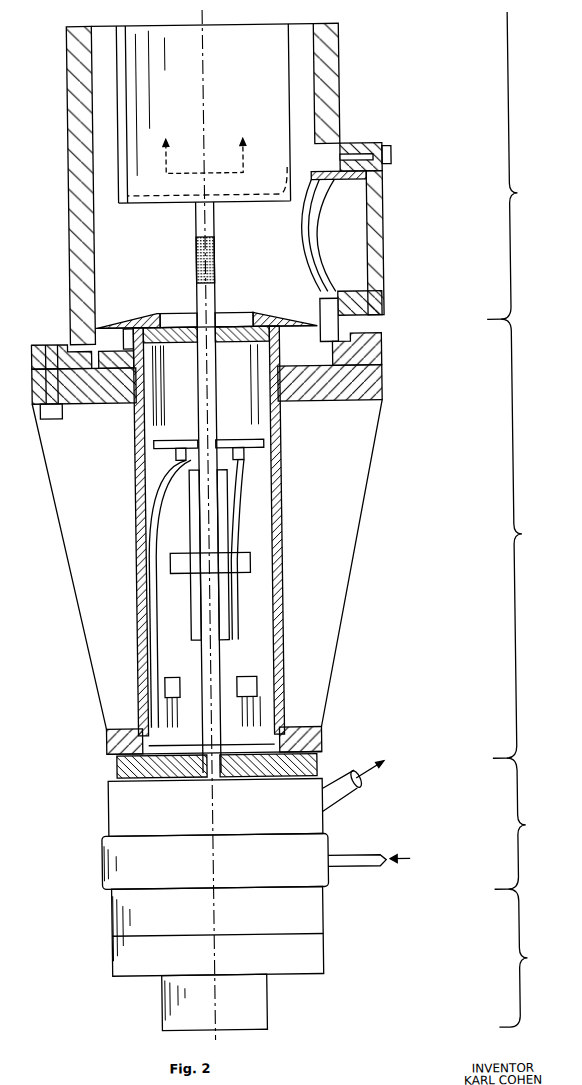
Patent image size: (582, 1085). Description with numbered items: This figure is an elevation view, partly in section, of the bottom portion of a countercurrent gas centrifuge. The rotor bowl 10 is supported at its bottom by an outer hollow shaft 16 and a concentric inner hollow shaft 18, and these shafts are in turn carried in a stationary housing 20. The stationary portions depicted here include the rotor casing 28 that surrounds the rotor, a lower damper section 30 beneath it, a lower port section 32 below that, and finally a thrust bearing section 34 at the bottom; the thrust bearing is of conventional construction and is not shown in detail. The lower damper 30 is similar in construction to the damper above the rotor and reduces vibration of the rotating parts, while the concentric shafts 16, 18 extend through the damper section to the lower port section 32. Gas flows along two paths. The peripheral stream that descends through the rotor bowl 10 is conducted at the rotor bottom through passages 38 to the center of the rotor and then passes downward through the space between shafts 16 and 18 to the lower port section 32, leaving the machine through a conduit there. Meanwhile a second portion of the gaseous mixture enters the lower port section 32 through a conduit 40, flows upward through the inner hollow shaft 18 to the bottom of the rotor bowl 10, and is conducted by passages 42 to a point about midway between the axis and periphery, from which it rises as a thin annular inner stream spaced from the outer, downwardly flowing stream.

The rotor bowl 10 is at (277, 96).
The outer hollow shaft 16 is at (215, 248).
The inner hollow shaft 18 is at (215, 265).
The stationary housing 20 is at (358, 417).
The rotor casing 28 is at (422, 177).
The lower damper section 30 is at (290, 549).
The lower port section 32 is at (326, 826).
The thrust bearing section 34 is at (333, 958).
The passages 38 is at (335, 792).
The conduit 40 is at (338, 863).
The passages 42 is at (212, 170).